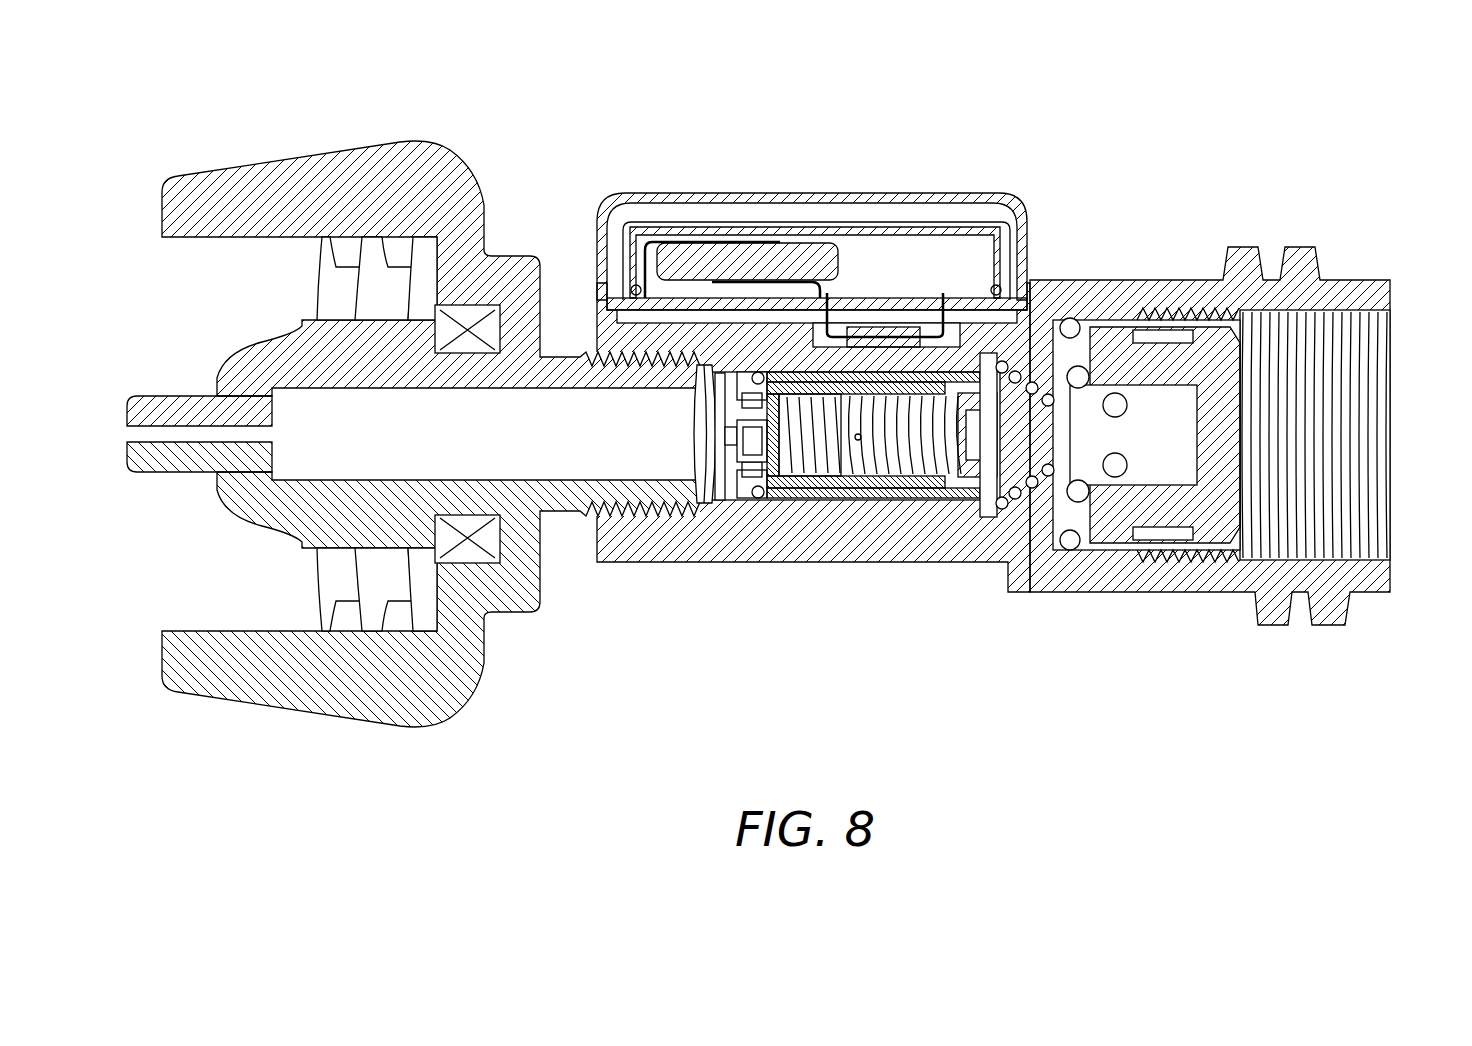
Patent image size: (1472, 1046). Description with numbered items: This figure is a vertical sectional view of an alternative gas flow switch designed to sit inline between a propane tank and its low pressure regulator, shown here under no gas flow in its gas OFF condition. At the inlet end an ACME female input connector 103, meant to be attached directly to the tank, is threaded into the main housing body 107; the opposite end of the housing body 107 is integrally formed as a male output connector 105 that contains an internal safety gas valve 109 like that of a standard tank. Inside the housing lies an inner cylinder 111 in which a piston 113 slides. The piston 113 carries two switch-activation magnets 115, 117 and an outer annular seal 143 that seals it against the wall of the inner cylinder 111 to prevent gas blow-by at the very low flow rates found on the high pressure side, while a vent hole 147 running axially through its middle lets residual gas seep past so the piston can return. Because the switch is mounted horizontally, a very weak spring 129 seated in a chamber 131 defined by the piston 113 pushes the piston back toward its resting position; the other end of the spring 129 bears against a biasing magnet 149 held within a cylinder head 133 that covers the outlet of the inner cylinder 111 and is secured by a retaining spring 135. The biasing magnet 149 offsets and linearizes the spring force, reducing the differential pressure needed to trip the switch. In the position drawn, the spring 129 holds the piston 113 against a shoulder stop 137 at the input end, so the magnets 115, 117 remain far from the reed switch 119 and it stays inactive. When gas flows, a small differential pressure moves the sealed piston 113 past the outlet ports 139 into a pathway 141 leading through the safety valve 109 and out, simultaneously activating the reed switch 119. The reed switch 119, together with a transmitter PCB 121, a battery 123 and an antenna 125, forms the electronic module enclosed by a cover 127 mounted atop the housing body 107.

The female input connector 103 is at (283, 173).
The male output connector 105 is at (1340, 282).
The main housing body 107 is at (948, 417).
The internal safety gas valve 109 is at (1140, 307).
The inner cylinder 111 is at (841, 478).
The piston 113 is at (788, 478).
The switch-activation magnet 115 is at (709, 500).
The switch-activation magnet 117 is at (761, 478).
The reed switch 119 is at (935, 305).
The transmitter PCB 121 is at (930, 293).
The battery 123 is at (740, 252).
The antenna 125 is at (815, 233).
The cover 127 is at (922, 196).
The spring 129 is at (885, 478).
The chamber 131 is at (805, 478).
The cylinder head 133 is at (1033, 543).
The retaining spring 135 is at (1075, 500).
The shoulder stop 137 is at (735, 418).
The outlet ports 139 is at (860, 480).
The pathway 141 is at (935, 490).
The outer annular seal 143 is at (744, 485).
The vent hole 147 is at (724, 498).
The biasing magnet 149 is at (1050, 362).